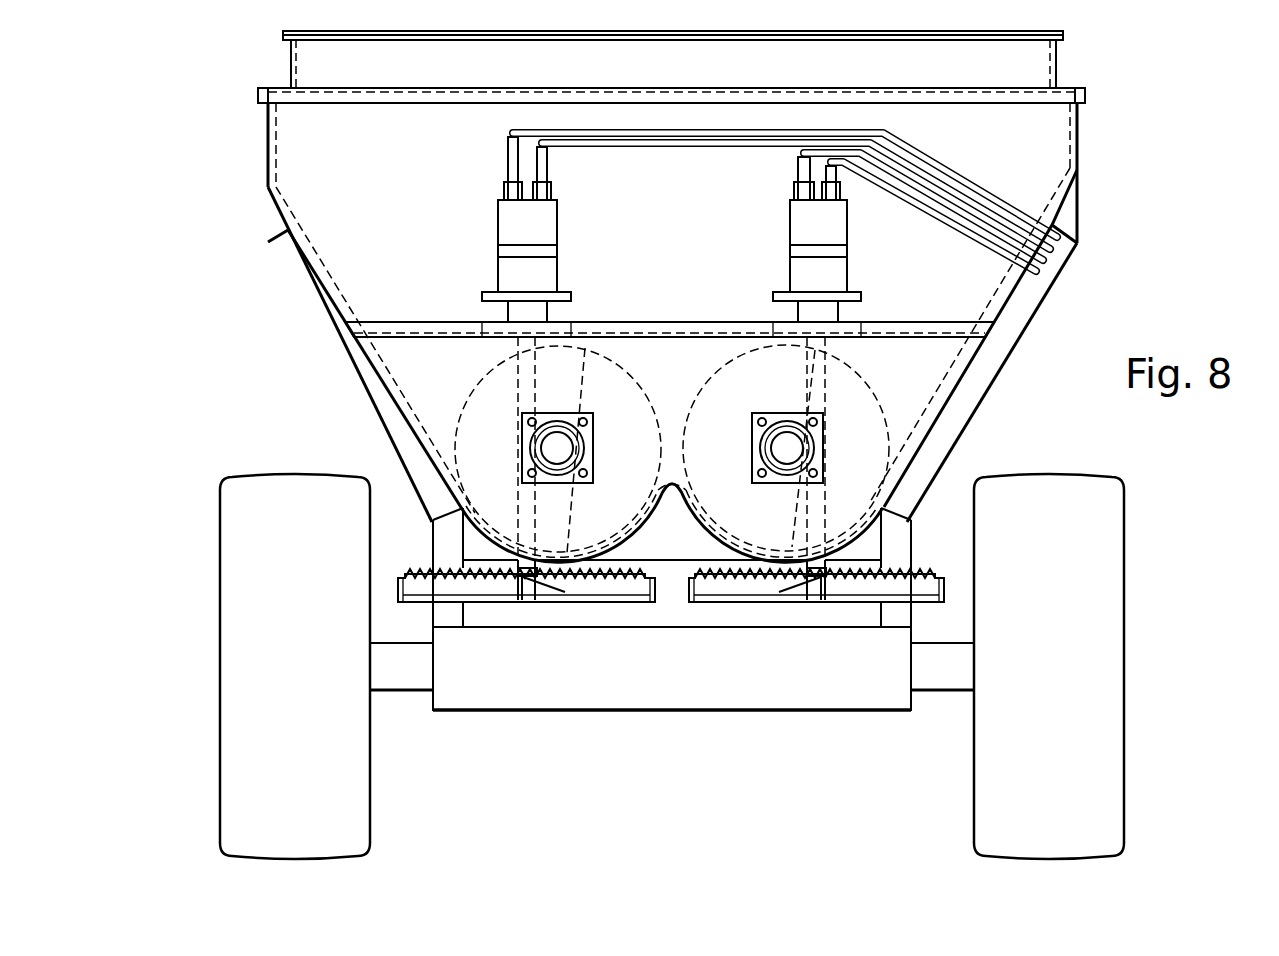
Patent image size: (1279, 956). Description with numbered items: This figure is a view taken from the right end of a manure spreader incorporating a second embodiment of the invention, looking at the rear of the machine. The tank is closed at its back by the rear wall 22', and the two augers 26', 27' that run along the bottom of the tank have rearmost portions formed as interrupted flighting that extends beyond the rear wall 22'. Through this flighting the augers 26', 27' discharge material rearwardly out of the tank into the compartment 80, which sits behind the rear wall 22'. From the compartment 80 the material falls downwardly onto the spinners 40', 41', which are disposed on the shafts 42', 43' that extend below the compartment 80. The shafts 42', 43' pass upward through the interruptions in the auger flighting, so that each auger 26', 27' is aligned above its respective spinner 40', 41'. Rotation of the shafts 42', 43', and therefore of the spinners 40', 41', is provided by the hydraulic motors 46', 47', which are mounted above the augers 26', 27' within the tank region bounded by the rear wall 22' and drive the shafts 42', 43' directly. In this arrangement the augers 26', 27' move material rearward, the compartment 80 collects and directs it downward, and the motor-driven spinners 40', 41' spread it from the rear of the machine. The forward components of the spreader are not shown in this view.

The compartment 80 is at (440, 369).
The rear wall 22' is at (671, 149).
The auger 26' is at (463, 449).
The auger 27' is at (885, 448).
The spinner 40' is at (526, 679).
The spinner 41' is at (813, 681).
The shaft 42' is at (426, 468).
The shaft 43' is at (920, 468).
The hydraulic motor 46' is at (475, 229).
The hydraulic motor 47' is at (769, 239).